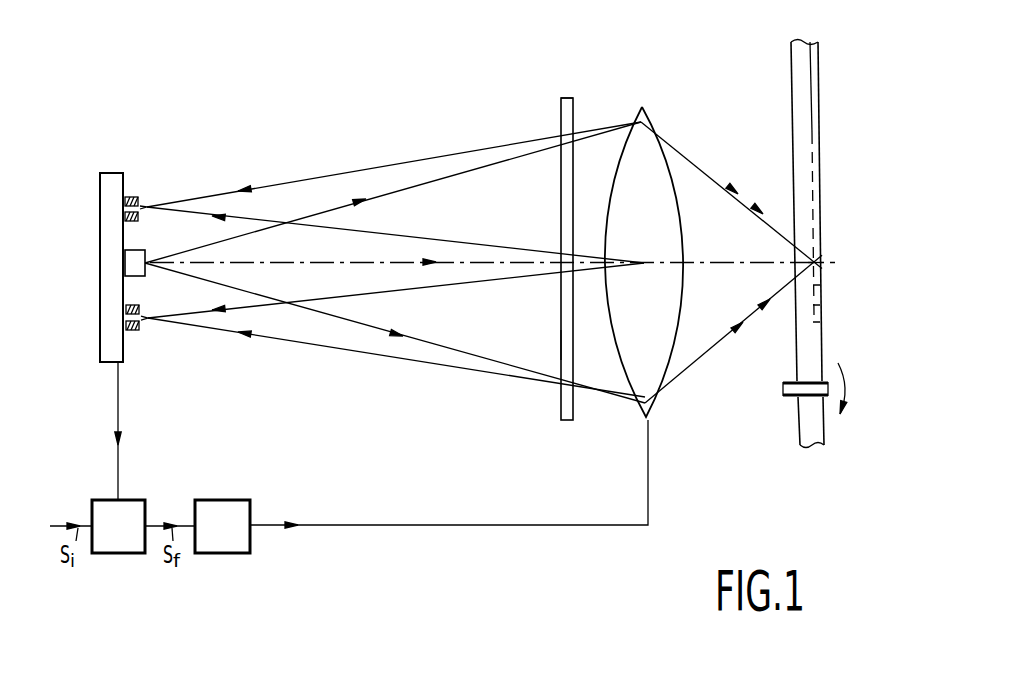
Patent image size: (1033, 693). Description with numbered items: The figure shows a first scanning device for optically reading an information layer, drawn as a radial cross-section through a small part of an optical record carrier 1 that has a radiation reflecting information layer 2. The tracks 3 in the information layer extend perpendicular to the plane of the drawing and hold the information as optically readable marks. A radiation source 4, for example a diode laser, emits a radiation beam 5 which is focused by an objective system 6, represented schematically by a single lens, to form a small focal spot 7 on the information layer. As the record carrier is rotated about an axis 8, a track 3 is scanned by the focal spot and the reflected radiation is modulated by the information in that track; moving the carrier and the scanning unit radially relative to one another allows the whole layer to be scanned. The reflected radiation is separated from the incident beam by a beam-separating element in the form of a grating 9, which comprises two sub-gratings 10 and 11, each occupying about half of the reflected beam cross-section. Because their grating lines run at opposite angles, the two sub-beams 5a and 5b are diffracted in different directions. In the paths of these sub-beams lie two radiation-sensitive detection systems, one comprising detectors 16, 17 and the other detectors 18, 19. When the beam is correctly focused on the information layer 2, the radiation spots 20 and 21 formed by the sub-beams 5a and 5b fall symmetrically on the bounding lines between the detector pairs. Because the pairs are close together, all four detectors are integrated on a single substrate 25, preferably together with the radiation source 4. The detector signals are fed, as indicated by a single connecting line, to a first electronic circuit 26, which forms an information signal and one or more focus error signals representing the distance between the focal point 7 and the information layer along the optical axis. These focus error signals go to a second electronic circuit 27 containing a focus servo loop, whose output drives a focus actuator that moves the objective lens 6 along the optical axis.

The optical record carrier 1 is at (808, 26).
The information layer 2 is at (813, 125).
The tracks 3 is at (819, 322).
The radiation source 4 is at (130, 262).
The radiation beam 5 is at (366, 325).
The sub-beam 5a is at (300, 180).
The sub-beam 5b is at (271, 340).
The objective system 6 is at (645, 415).
The focal spot 7 is at (822, 262).
The axis 8 is at (840, 389).
The grating 9 is at (577, 410).
The sub-grating 10 is at (567, 347).
The sub-grating 11 is at (563, 113).
The detector 16 is at (128, 196).
The detector 17 is at (136, 222).
The detector 18 is at (139, 306).
The detector 19 is at (133, 332).
The radiation spot 20 is at (147, 205).
The radiation spot 21 is at (148, 322).
The substrate 25 is at (112, 318).
The first electronic circuit 26 is at (128, 547).
The second electronic circuit 27 is at (229, 547).